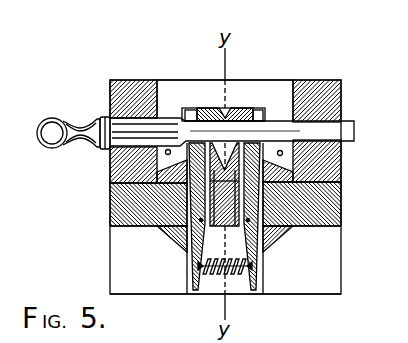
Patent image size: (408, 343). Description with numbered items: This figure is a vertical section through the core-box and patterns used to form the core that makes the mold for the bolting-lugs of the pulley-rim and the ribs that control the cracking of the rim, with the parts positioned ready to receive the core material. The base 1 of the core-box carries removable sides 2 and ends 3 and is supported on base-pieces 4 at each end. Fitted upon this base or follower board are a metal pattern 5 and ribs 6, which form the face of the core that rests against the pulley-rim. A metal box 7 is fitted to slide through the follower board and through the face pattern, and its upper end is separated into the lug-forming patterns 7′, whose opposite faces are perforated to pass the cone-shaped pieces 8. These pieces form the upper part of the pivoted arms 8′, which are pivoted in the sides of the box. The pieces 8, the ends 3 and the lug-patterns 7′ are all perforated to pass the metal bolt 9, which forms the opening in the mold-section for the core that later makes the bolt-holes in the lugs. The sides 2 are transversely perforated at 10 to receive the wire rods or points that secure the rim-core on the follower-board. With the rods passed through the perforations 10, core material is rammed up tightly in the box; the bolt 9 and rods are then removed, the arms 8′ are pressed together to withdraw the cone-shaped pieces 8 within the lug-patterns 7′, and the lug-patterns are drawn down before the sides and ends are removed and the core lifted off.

The base of the core-box 1 is at (338, 216).
The removable sides of the core-box 2 is at (168, 93).
The removable ends of the core-box 3 is at (136, 83).
The base-pieces 4 is at (225, 260).
The metal pattern 5 is at (110, 179).
The ribs 6 is at (224, 184).
The metal box 7 is at (241, 269).
The lug-forming patterns 7′ is at (232, 90).
The cone-shaped pieces 8 is at (225, 103).
The pivoted arms 8′ is at (225, 231).
The metal bolt 9 is at (344, 125).
The transverse perforations 10 is at (165, 153).